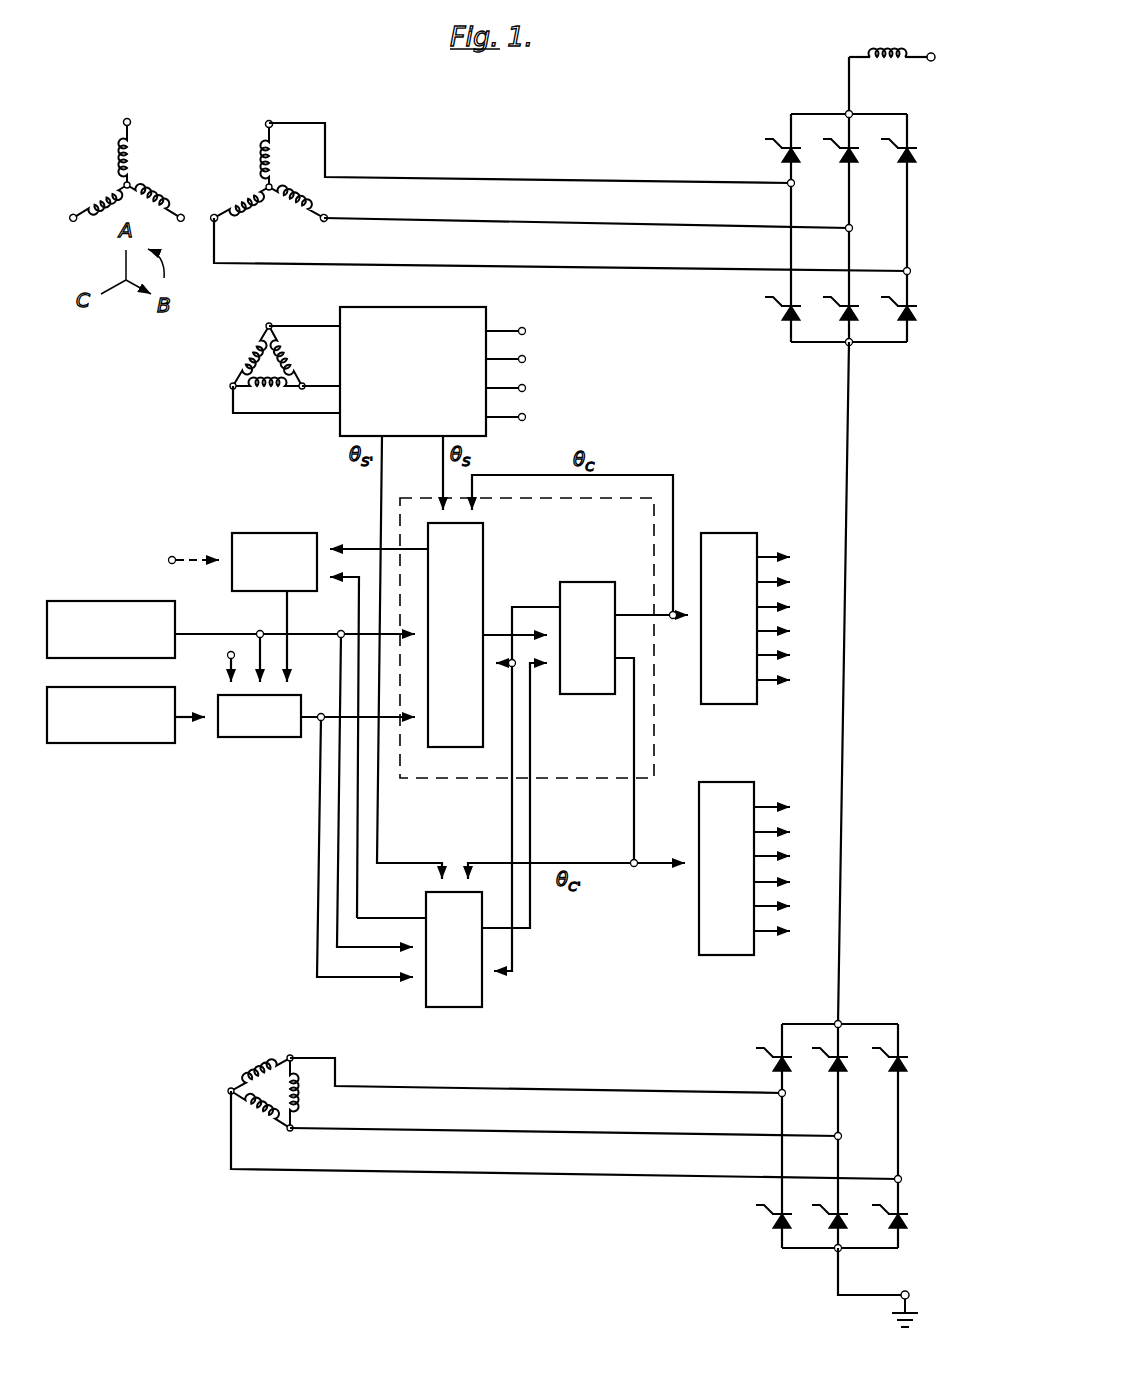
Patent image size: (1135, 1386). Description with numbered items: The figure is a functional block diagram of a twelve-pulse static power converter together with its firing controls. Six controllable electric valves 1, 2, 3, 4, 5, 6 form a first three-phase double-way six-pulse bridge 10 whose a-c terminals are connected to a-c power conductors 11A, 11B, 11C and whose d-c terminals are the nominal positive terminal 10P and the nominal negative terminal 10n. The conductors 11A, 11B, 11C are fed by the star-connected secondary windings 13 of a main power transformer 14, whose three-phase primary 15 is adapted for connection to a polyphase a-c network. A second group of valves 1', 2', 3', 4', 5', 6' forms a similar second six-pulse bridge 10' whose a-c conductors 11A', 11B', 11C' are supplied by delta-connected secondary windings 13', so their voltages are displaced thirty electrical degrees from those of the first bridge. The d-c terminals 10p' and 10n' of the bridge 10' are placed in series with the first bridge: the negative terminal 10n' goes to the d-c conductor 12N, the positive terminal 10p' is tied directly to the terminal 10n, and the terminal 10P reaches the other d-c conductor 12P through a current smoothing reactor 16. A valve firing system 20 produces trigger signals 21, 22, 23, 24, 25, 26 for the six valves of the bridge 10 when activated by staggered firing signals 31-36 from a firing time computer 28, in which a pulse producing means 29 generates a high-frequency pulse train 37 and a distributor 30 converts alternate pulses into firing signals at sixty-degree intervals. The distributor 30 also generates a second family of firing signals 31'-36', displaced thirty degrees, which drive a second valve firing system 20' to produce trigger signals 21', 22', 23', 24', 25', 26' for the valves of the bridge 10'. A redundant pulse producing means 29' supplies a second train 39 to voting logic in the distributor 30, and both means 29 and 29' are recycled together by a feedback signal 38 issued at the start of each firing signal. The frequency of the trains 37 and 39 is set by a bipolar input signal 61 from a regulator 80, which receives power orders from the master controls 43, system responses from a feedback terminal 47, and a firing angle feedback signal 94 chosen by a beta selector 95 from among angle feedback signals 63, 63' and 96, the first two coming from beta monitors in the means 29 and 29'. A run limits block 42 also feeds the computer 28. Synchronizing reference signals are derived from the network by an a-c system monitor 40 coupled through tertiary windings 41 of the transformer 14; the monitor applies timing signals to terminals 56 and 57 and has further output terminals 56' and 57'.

The controllable electric valve 1 is at (795, 158).
The controllable electric valve 2 is at (910, 316).
The controllable electric valve 3 is at (853, 158).
The controllable electric valve 4 is at (795, 316).
The controllable electric valve 5 is at (910, 158).
The controllable electric valve 6 is at (853, 316).
The first three-phase double-way six-pulse bridge 10 is at (852, 221).
The nominal positive d-c terminal 10P is at (847, 112).
The nominal negative d-c terminal 10n is at (824, 363).
The a-c power conductor 11A is at (530, 153).
The a-c power conductor 11B is at (586, 208).
The a-c power conductor 11C is at (560, 244).
The d-c power conductor 12P is at (892, 55).
The d-c power conductor 12N is at (865, 1299).
The star-connected secondary windings 13 is at (270, 176).
The main power transformer 14 is at (260, 176).
The three-phase primary 15 is at (110, 171).
The current smoothing reactor 16 is at (893, 64).
The valve firing system 20 is at (768, 597).
The trigger signal 21 is at (796, 557).
The trigger signal 22 is at (796, 582).
The trigger signal 23 is at (796, 607).
The trigger signal 24 is at (796, 631).
The trigger signal 25 is at (796, 655).
The trigger signal 26 is at (796, 680).
The firing time computer 28 is at (573, 781).
The pulse train producing means 29 is at (480, 631).
The firing signal distributor 30 is at (594, 580).
The firing signals 31-36 is at (659, 629).
The pulse train 37 is at (497, 632).
The feedback signal 38 is at (538, 606).
The second pulse train 39 is at (530, 913).
The a-c system monitor 40 is at (421, 307).
The tertiary windings 41 is at (237, 356).
The run limits block 42 is at (113, 601).
The master controls 43 is at (119, 743).
The feedback terminal 47 is at (227, 655).
The terminal 56 is at (522, 332).
The terminal 57 is at (522, 360).
The monitor output 56' is at (525, 389).
The monitor output 57' is at (525, 418).
The variable bipolar input signal 61 is at (320, 712).
The firing angle feedback signal 63 is at (379, 529).
The firing angle feedback signal 63' is at (338, 747).
The regulator 80 is at (262, 737).
The response feedback signal 94 is at (285, 608).
The beta selector 95 is at (276, 533).
The angle feedback signals 96 is at (171, 556).
The controllable electric valve 1' is at (788, 1067).
The controllable electric valve 2' is at (902, 1223).
The controllable electric valve 3' is at (845, 1067).
The controllable electric valve 4' is at (787, 1224).
The controllable electric valve 5' is at (903, 1066).
The controllable electric valve 6' is at (844, 1224).
The second six-pulse bridge 10' is at (845, 1134).
The nominal positive d-c terminal 10p' is at (872, 1005).
The nominal negative d-c terminal 10n' is at (811, 1266).
The a-c conductor 11A' is at (536, 1072).
The a-c conductor 11B' is at (564, 1117).
The a-c conductor 11C' is at (564, 1135).
The delta-connected secondary windings 13' is at (263, 1081).
The valve firing system 20' is at (769, 847).
The trigger signal 21' is at (796, 807).
The trigger signal 22' is at (796, 832).
The trigger signal 23' is at (796, 856).
The trigger signal 24' is at (796, 882).
The trigger signal 25' is at (796, 906).
The trigger signal 26' is at (796, 931).
The redundant pulse train producing means 29' is at (446, 956).
The second family of firing signals 31'-36' is at (576, 776).